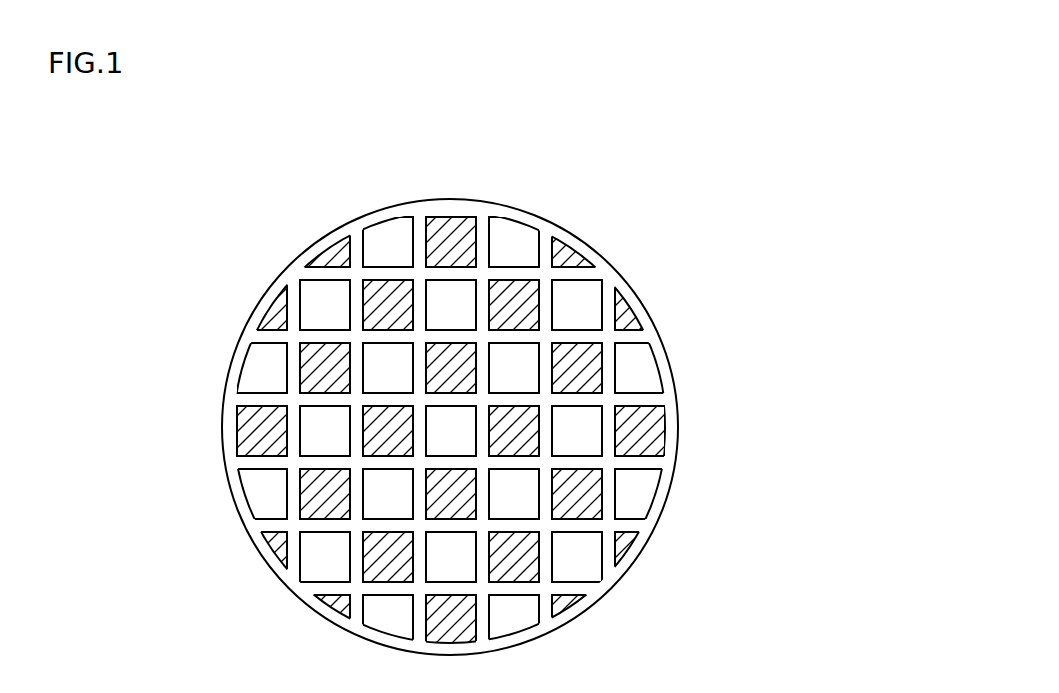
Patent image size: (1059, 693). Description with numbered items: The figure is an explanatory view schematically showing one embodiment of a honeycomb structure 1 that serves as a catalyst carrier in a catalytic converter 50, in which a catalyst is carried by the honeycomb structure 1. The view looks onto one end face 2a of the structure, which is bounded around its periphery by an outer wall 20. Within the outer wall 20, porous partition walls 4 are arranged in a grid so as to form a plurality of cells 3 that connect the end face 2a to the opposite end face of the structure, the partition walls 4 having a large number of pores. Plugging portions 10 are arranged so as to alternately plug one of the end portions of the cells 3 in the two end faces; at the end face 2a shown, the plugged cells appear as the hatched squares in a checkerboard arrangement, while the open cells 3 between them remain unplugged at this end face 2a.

The honeycomb structure 1 is at (422, 412).
The catalytic converter 50 is at (422, 412).
The end face 2a is at (458, 412).
The cell 3 is at (395, 295).
The partition wall 4 is at (476, 407).
The plugging portion 10 is at (317, 501).
The outer wall 20 is at (665, 375).